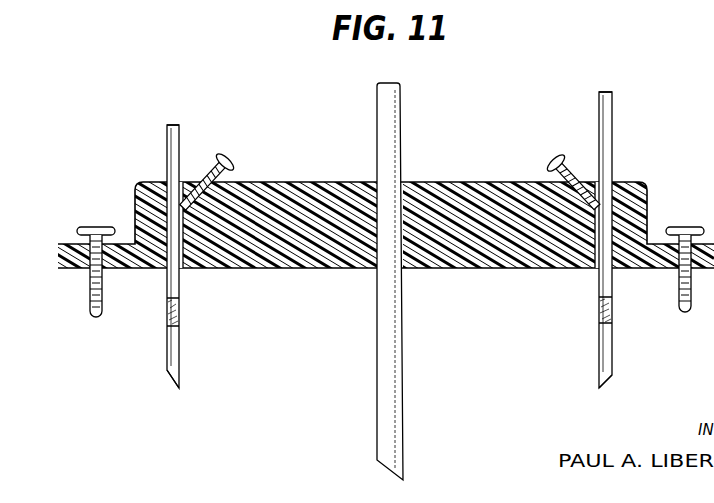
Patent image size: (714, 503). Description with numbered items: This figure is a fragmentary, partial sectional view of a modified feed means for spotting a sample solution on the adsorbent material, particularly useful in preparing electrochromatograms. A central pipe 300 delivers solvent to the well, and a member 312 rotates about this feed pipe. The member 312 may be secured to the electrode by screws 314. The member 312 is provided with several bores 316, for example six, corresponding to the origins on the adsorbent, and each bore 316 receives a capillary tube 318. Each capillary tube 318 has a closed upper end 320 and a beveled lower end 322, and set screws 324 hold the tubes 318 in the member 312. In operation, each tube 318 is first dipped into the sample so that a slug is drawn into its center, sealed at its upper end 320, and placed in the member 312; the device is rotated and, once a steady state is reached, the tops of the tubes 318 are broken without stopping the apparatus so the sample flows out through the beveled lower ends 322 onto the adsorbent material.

The pipe 300 is at (388, 158).
The member 312 is at (317, 252).
The screws 314 is at (88, 225).
The bores 316 is at (183, 248).
The capillary tube 318 is at (170, 160).
The closed upper ends 320 is at (171, 126).
The beveled lower ends 322 is at (172, 381).
The set screws 324 is at (228, 153).